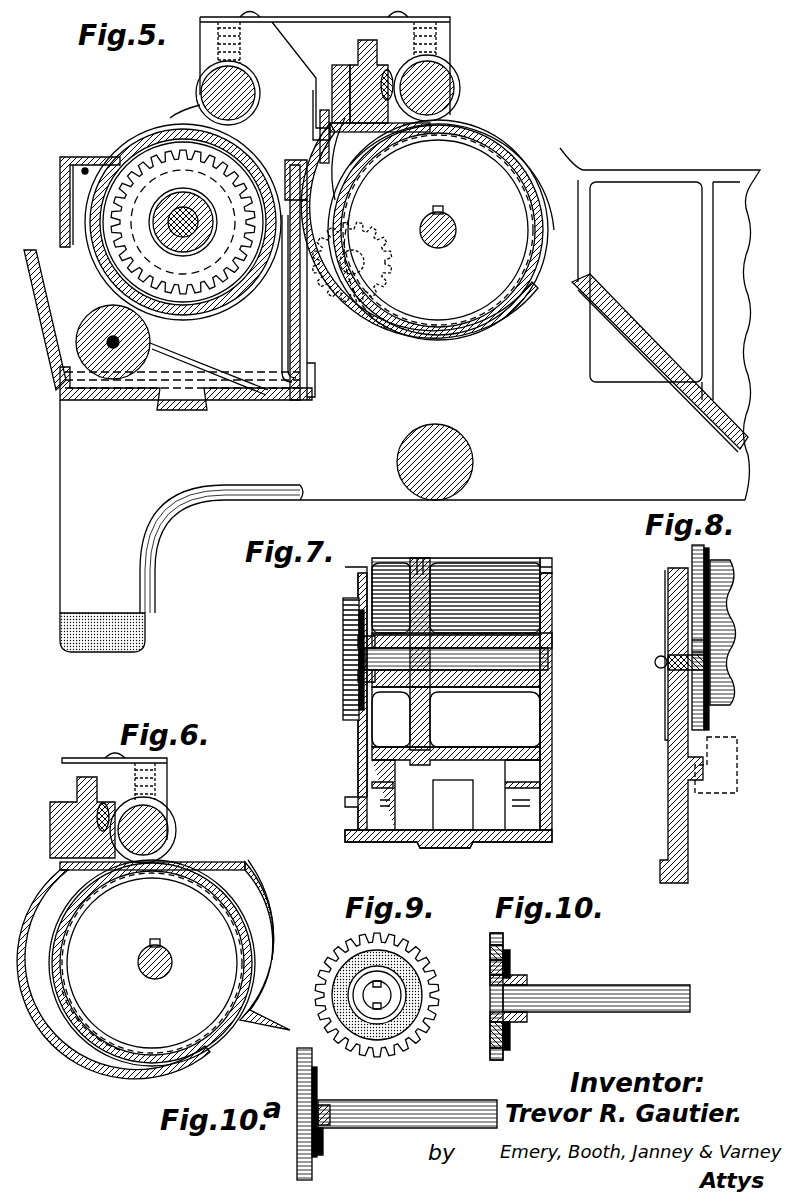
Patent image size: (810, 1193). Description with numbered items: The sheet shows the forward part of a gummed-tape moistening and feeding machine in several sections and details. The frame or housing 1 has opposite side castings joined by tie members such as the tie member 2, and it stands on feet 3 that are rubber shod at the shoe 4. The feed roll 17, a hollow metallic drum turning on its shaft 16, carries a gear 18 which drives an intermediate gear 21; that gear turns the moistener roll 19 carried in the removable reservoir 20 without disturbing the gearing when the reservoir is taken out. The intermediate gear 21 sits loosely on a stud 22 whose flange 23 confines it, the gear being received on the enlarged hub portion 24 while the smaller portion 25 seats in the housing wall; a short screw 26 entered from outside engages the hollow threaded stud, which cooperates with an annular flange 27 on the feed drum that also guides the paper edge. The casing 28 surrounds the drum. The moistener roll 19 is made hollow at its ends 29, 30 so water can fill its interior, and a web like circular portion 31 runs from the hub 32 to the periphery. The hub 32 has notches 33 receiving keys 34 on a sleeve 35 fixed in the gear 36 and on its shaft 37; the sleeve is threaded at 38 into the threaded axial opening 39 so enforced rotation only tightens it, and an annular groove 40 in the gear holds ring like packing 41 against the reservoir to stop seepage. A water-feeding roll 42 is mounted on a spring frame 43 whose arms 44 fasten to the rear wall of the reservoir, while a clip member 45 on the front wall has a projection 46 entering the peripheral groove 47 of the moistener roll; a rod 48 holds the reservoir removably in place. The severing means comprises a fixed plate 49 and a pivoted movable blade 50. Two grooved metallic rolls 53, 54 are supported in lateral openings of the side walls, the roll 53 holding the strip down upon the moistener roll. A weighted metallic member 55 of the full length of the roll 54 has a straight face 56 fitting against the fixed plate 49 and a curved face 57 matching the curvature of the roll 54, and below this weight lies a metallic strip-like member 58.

In FIG. 5, the frame or housing 1 is at (628, 490).
In FIG. 5, the tie member 2 is at (397, 462).
In FIG. 5, the feet 3 is at (62, 603).
In FIG. 5, the rubber shoe 4 is at (62, 632).
In FIG. 5, the shaft 16 is at (420, 228).
In FIG. 6, the shaft 16 is at (138, 962).
In FIG. 5, the feed roll 17 is at (445, 322).
In FIG. 6, the feed roll 17 is at (118, 1022).
In FIG. 5, the gear 18 is at (388, 318).
In FIG. 6, the gear 18 is at (127, 1062).
In FIG. 5, the moistener roll 19 is at (222, 300).
In FIG. 7, the moistener roll 19 is at (455, 562).
In FIG. 5, the reservoir 20 is at (305, 338).
In FIG. 7, the reservoir 20 is at (552, 732).
In FIG. 5, the intermediate gear 21 is at (332, 300).
In FIG. 8, the intermediate gear 21 is at (704, 630).
In FIG. 8, the stud 22 is at (709, 652).
In FIG. 5, the flange 23 is at (340, 275).
In FIG. 8, the flange 23 is at (706, 642).
In FIG. 8, the hub portion 24 is at (730, 690).
In FIG. 8, the portion of smaller diameter 25 is at (680, 672).
In FIG. 8, the screw 26 is at (655, 660).
In FIG. 8, the annular flange 27 is at (710, 726).
In FIG. 5, the drum casing 28 is at (80, 218).
In FIG. 7, the hollow end 29 is at (384, 580).
In FIG. 7, the hollow end 30 is at (490, 585).
In FIG. 7, the web like circular portion 31 is at (417, 590).
In FIG. 7, the hub 32 is at (545, 636).
In FIG. 7, the notches 33 is at (343, 632).
In FIG. 7, the keys 34 is at (362, 651).
In FIG. 9, the keys 34 is at (365, 975).
In FIG. 10, the keys 34 is at (527, 980).
In FIG. 10A, the keys 34 is at (326, 1118).
In FIG. 10, the sleeve 35 is at (512, 1028).
In FIG. 10A, the sleeve 35 is at (320, 1140).
In FIG. 10, the gear 36 is at (490, 962).
In FIG. 10A, the gear 36 is at (297, 1078).
In FIG. 7, the shaft 37 is at (495, 676).
In FIG. 10, the shaft 37 is at (610, 992).
In FIG. 10A, the shaft 37 is at (362, 1102).
In FIG. 10, the threads 38 is at (490, 1022).
In FIG. 10, the threaded axial opening 39 is at (490, 975).
In FIG. 10, the annular groove 40 is at (505, 950).
In FIG. 9, the ring like packing 41 is at (405, 965).
In FIG. 10, the ring like packing 41 is at (510, 962).
In FIG. 10A, the ring like packing 41 is at (317, 1086).
In FIG. 5, the roll 42 is at (100, 322).
In FIG. 5, the spring frame 43 is at (182, 350).
In FIG. 5, the arms 44 is at (282, 358).
In FIG. 5, the clip member 45 is at (75, 160).
In FIG. 5, the projection 46 is at (104, 157).
In FIG. 7, the peripheral groove 47 is at (420, 575).
In FIG. 5, the rod 48 is at (60, 163).
In FIG. 5, the fixed plate 49 is at (310, 96).
In FIG. 5, the movable blade 50 is at (320, 145).
In FIG. 5, the roll 53 is at (215, 85).
In FIG. 5, the roll 54 is at (440, 86).
In FIG. 6, the roll 54 is at (170, 828).
In FIG. 5, the metallic member 55 is at (363, 68).
In FIG. 6, the metallic member 55 is at (75, 802).
In FIG. 5, the face 56 is at (337, 70).
In FIG. 5, the curved face 57 is at (388, 72).
In FIG. 6, the curved face 57 is at (105, 808).
In FIG. 5, the strip-like member 58 is at (375, 133).
In FIG. 6, the strip-like member 58 is at (108, 878).